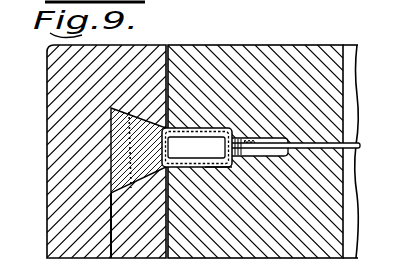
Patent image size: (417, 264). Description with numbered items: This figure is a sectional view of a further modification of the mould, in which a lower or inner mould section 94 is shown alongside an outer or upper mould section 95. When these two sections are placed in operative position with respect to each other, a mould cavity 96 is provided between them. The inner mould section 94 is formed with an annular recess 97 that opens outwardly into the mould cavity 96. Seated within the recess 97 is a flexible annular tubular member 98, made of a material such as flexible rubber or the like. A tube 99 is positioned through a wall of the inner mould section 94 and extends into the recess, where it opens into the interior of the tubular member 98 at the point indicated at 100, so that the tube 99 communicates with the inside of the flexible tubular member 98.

The lower or inner mould section 94 is at (286, 58).
The outer or upper mould section 95 is at (60, 99).
The mould cavity 96 is at (133, 125).
The annular recess 97 is at (228, 128).
The flexible annular tubular member 98 is at (212, 168).
The tube 99 is at (293, 141).
The opening of tube into tubular member 100 is at (216, 129).